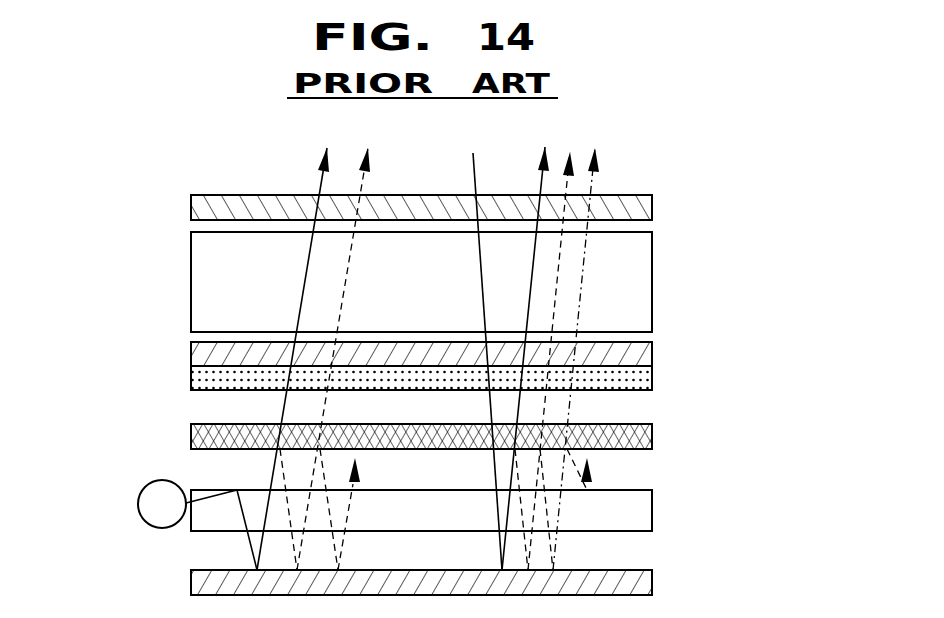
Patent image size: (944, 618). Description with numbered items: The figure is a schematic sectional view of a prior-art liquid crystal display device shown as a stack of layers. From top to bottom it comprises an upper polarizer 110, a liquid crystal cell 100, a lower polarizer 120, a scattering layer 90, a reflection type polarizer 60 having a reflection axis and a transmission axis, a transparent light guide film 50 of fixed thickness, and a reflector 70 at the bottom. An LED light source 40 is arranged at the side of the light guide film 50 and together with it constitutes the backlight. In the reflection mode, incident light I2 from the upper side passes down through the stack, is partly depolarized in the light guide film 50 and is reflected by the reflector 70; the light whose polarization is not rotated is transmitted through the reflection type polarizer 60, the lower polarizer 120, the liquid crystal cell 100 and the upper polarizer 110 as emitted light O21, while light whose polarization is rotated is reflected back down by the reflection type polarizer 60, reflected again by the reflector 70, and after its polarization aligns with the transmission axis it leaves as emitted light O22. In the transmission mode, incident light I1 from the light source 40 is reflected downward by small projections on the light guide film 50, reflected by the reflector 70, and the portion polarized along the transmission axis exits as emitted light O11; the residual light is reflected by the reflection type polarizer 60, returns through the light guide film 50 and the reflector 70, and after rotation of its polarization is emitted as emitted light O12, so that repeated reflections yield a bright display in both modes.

The upper polarizer 110 is at (653, 208).
The liquid crystal cell 100 is at (643, 286).
The lower polarizer 120 is at (647, 353).
The scattering layer 90 is at (647, 378).
The reflection type polarizer 60 is at (645, 440).
The transparent light guide film 50 is at (643, 510).
The reflector 70 is at (648, 582).
The light source 40 is at (155, 507).
The incident light I1 is at (213, 486).
The incident light I2 is at (473, 185).
The emitted light O11 is at (320, 182).
The emitted light O12 is at (357, 190).
The emitted light O21 is at (542, 185).
The emitted light O22 is at (572, 185).